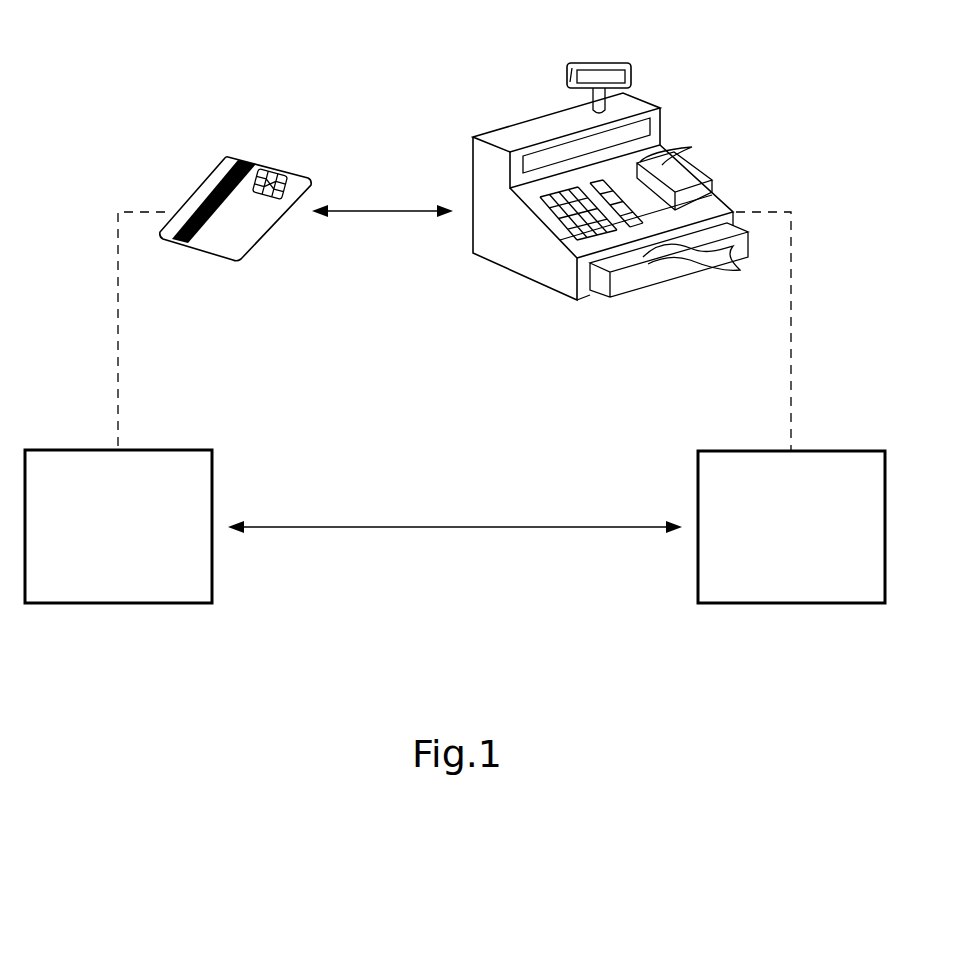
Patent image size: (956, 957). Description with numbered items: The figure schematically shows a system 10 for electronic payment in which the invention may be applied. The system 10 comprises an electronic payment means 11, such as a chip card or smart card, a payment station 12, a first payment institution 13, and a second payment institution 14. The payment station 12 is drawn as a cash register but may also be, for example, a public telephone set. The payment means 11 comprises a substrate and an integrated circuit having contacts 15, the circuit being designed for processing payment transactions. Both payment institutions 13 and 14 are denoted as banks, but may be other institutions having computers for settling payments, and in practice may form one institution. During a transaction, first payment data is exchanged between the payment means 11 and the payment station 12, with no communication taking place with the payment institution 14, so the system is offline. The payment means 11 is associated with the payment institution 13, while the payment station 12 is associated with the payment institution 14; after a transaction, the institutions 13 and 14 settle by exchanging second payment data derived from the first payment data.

The system for electronic payment 10 is at (158, 145).
The payment means 11 is at (229, 156).
The payment station 12 is at (492, 130).
The first payment institution 13 is at (123, 605).
The second payment institution 14 is at (795, 605).
The contacts 15 is at (268, 167).